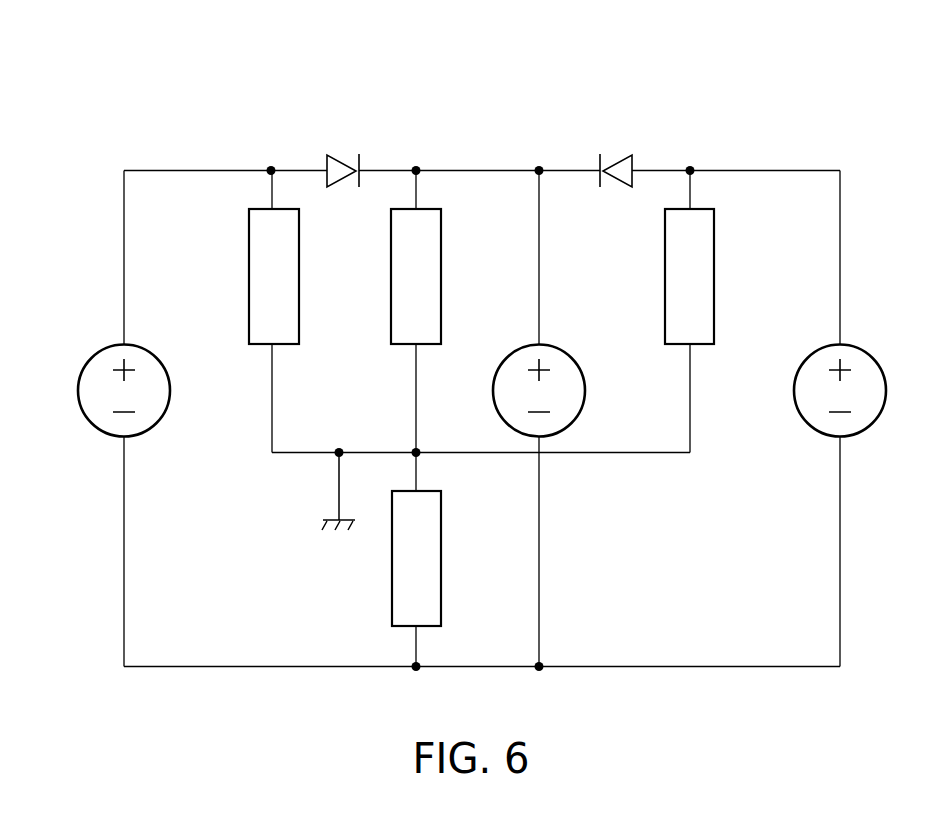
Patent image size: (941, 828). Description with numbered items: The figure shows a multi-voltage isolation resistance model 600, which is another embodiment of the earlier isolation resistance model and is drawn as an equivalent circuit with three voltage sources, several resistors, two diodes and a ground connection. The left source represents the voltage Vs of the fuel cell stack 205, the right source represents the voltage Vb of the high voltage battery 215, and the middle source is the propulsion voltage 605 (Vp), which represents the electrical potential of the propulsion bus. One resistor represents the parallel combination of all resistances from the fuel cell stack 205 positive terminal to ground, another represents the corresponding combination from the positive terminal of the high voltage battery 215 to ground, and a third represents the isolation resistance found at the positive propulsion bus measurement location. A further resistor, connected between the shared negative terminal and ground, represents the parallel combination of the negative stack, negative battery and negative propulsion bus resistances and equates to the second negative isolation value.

The multi-voltage isolation resistance model 600 is at (481, 346).
The fuel cell stack 205 is at (103, 348).
The propulsion voltage 605 is at (562, 348).
The high voltage battery 215 is at (862, 348).